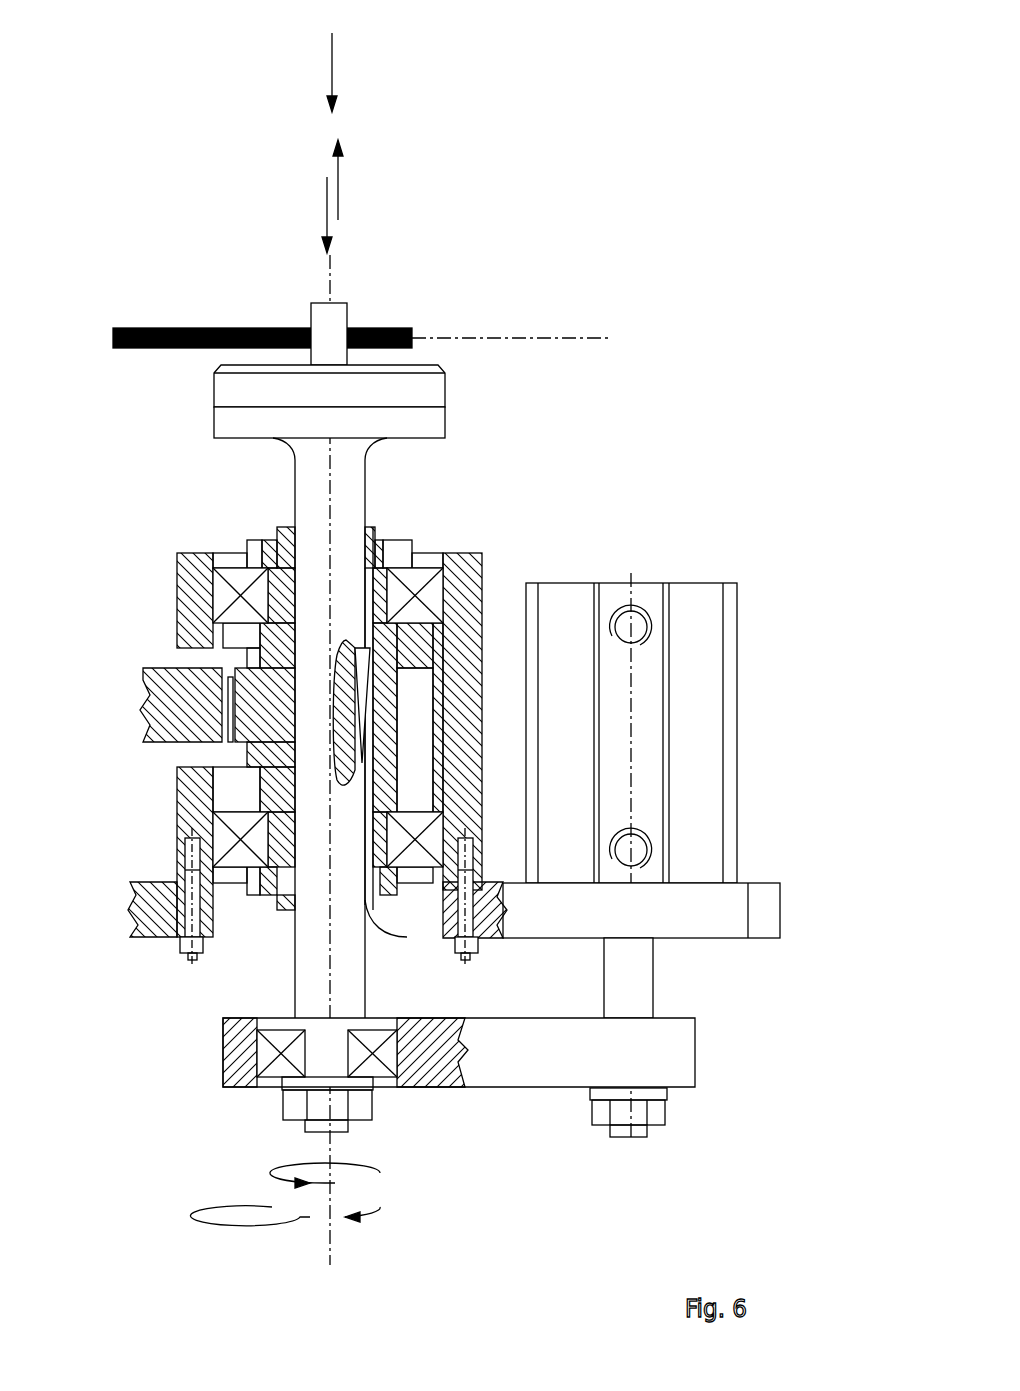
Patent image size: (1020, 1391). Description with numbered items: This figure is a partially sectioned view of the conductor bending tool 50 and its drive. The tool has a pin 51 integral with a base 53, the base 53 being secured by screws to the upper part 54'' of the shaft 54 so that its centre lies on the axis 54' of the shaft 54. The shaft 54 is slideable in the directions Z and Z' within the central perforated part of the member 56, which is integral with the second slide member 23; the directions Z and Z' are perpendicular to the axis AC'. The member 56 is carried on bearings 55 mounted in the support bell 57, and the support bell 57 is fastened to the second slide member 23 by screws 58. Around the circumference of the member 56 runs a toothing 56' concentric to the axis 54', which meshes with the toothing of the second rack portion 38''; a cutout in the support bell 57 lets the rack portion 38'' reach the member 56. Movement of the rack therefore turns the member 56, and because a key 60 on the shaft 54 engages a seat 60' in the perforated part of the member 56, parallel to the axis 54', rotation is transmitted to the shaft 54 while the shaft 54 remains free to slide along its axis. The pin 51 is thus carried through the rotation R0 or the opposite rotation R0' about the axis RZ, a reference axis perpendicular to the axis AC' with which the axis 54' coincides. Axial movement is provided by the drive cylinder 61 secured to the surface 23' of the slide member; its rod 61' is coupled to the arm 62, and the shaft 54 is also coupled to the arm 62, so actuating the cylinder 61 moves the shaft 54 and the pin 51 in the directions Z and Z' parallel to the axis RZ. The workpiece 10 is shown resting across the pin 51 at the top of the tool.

The workpiece / glass substrate 10 is at (332, 60).
The direction Z is at (368, 180).
The direction Z' is at (296, 215).
The axis AC' is at (517, 298).
The conductor bending tool 50 is at (395, 294).
The pin 51 is at (318, 313).
The base 53 is at (428, 387).
The shaft 54 is at (277, 757).
The axis of the shaft 54' is at (410, 760).
The upper part of the shaft 54'' is at (384, 437).
The bearings 55 is at (228, 592).
The member 56 is at (377, 718).
The toothing 56' is at (145, 688).
The support bell 57 is at (190, 572).
The screws 58 is at (182, 945).
The key 60 is at (351, 675).
The seat 60' is at (395, 758).
The drive cylinder 61 is at (675, 855).
The rod of the cylinder 61' is at (707, 980).
The arm 62 is at (523, 1065).
The second slide member 23 is at (264, 910).
The surface 23' is at (661, 864).
The second rack portion 38'' is at (129, 709).
The rotation R0 is at (370, 1173).
The opposite rotation R0' is at (277, 1208).
The axis RZ is at (327, 1238).